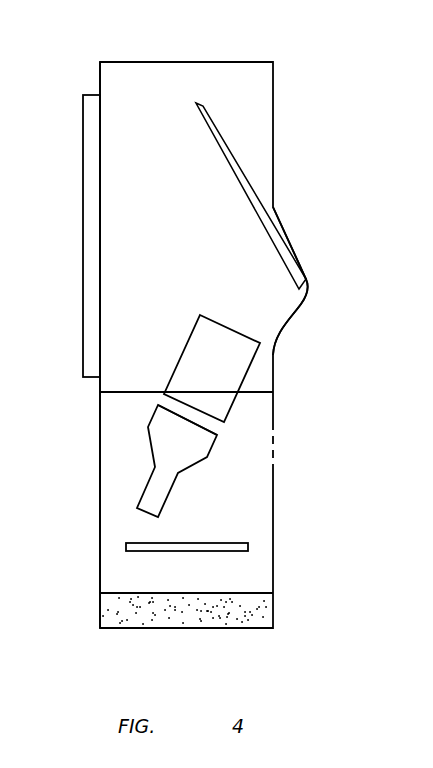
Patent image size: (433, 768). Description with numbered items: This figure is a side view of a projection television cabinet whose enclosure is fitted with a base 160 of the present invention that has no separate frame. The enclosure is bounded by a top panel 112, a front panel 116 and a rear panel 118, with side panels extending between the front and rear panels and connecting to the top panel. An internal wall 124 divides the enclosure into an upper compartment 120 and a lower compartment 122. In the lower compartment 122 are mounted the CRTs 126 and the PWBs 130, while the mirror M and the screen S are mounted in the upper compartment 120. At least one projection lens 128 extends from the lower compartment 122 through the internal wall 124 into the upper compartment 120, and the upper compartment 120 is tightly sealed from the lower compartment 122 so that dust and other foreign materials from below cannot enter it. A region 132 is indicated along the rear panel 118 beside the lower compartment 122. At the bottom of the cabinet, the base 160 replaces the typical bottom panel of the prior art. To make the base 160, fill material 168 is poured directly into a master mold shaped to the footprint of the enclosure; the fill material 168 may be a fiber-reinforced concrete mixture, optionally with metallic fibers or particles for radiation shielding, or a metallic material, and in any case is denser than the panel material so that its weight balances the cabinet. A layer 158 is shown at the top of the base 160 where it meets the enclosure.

The top panel 112 is at (203, 62).
The upper compartment 120 is at (143, 72).
The rear panel 118 is at (302, 318).
The mirror M is at (220, 148).
The screen S is at (83, 250).
The internal wall 124 is at (132, 391).
The projection lens 128 is at (225, 340).
The CRTs 126 is at (178, 460).
The lower compartment 122 is at (120, 427).
The front panel 116 is at (100, 468).
The opening 132 is at (300, 421).
The PWBs 130 is at (248, 548).
The base layer 158 is at (110, 612).
The fill material 168 is at (265, 610).
The base 160 is at (115, 631).